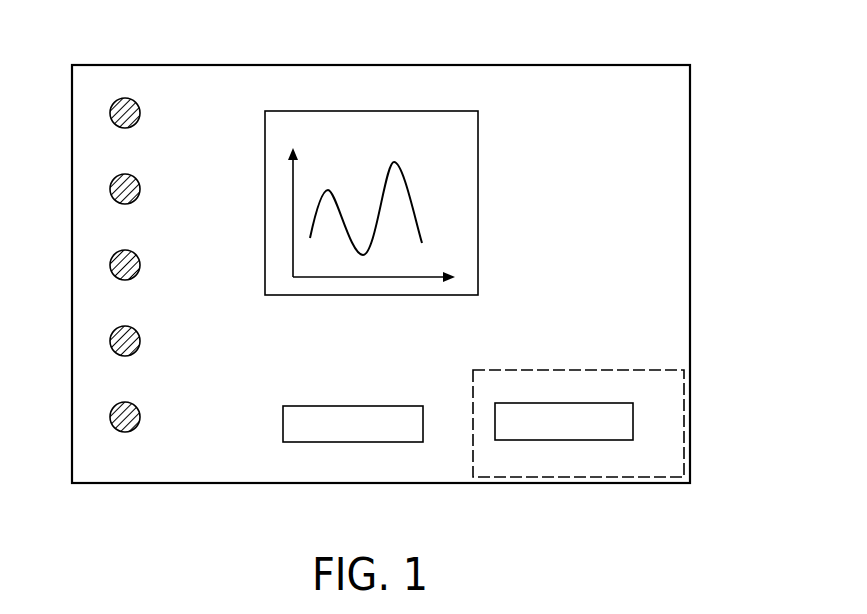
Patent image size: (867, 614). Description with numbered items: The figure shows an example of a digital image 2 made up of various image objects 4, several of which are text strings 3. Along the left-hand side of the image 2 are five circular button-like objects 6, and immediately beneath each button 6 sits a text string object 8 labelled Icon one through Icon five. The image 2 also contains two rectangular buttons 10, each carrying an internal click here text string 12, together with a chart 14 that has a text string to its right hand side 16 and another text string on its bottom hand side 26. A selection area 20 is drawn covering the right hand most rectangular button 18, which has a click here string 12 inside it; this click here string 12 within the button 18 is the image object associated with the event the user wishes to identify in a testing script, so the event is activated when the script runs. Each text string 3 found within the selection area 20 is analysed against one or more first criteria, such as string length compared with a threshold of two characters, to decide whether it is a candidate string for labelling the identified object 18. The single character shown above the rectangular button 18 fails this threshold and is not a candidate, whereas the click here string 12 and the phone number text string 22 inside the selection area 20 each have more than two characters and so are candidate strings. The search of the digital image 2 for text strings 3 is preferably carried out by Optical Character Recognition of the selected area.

The digital image 2 is at (540, 65).
The text string 3 is at (318, 129).
The image object 4 is at (103, 279).
The circular button-like object 6 is at (142, 113).
The text string object 8 is at (77, 303).
The rectangular button 10 is at (353, 380).
The click here text string 12 is at (618, 418).
The chart 14 is at (431, 191).
The right hand side text string 16 is at (681, 185).
The right hand most rectangular button 18 is at (650, 385).
The selection area 20 is at (639, 432).
The phone text string 22 is at (512, 472).
The bottom hand side text string 26 is at (296, 333).